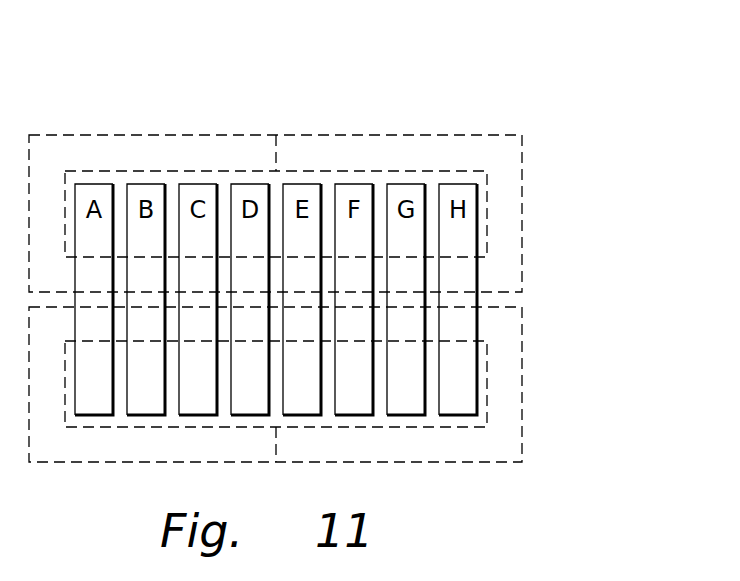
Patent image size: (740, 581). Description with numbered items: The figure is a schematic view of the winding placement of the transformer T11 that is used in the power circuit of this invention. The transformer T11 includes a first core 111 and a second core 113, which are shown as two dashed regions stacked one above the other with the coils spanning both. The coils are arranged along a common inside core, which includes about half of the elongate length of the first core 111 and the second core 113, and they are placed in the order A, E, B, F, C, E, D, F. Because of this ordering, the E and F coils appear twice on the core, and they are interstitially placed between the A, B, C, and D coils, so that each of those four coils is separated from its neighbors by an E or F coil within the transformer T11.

The transformer T11 is at (370, 115).
The first core 111 is at (522, 199).
The second core 113 is at (522, 371).